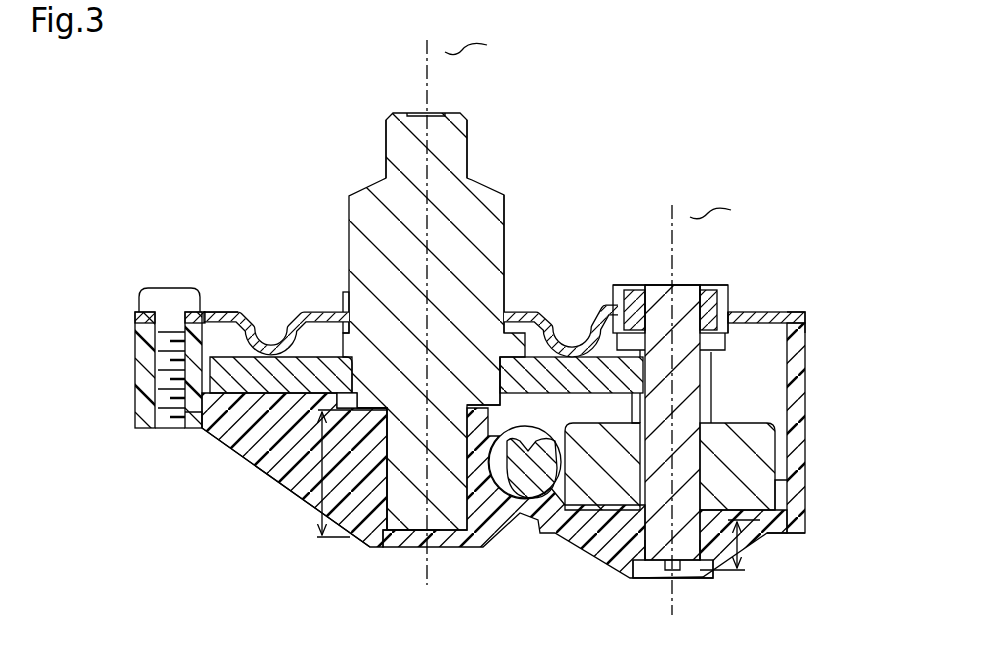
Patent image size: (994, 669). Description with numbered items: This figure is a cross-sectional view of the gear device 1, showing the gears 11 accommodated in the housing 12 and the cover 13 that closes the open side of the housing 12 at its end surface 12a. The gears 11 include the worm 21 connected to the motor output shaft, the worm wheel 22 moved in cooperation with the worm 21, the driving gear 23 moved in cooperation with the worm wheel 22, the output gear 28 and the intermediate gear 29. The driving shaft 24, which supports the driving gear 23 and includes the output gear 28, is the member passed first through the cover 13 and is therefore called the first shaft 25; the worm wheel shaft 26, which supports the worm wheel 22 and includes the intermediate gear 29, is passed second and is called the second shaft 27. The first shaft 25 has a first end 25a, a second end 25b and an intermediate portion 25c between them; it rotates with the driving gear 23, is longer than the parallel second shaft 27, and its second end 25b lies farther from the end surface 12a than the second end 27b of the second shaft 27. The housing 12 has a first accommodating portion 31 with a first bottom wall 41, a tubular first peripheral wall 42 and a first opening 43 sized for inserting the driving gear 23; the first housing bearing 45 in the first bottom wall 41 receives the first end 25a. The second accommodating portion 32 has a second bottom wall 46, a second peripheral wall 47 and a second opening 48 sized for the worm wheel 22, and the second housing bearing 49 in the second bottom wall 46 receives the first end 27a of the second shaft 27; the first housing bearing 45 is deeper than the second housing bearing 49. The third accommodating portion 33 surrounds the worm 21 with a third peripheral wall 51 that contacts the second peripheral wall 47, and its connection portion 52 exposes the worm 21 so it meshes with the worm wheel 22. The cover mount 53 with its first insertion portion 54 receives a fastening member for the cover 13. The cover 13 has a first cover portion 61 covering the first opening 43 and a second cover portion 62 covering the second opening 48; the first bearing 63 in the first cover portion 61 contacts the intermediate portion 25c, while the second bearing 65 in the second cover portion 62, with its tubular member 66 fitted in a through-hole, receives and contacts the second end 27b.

The gear device 1 is at (474, 325).
The gears 11 is at (545, 487).
The housing 12 is at (282, 503).
The end surface 12a is at (145, 305).
The cover 13 is at (800, 403).
The worm 21 is at (585, 508).
The worm wheel 22 is at (777, 495).
The driving gear 23 is at (288, 484).
The driving shaft 24 is at (406, 359).
The first shaft 25 is at (406, 359).
The first end 25a is at (385, 505).
The second end 25b is at (386, 155).
The intermediate portion 25c is at (325, 312).
The worm wheel shaft 26 is at (753, 429).
The second shaft 27 is at (753, 429).
The first end 27a is at (645, 570).
The second end 27b is at (699, 290).
The output gear 28 is at (507, 235).
The intermediate gear 29 is at (705, 412).
The first accommodating portion 31 is at (202, 428).
The second accommodating portion 32 is at (766, 429).
The third accommodating portion 33 is at (486, 398).
The first bottom wall 41 is at (190, 412).
The first peripheral wall 42 is at (115, 373).
The first opening 43 is at (203, 310).
The first housing bearing 45 is at (360, 498).
The second bottom wall 46 is at (772, 540).
The second peripheral wall 47 is at (806, 468).
The second opening 48 is at (803, 310).
The second housing bearing 49 is at (715, 576).
The third peripheral wall 51 is at (527, 405).
The connection portion 52 is at (556, 420).
The cover mount 53 is at (140, 318).
The first insertion portion 54 is at (115, 327).
The first cover portion 61 is at (250, 356).
The second cover portion 62 is at (780, 312).
The first bearing 63 is at (269, 290).
The second bearing 65 is at (592, 302).
The tubular member 66 is at (630, 292).